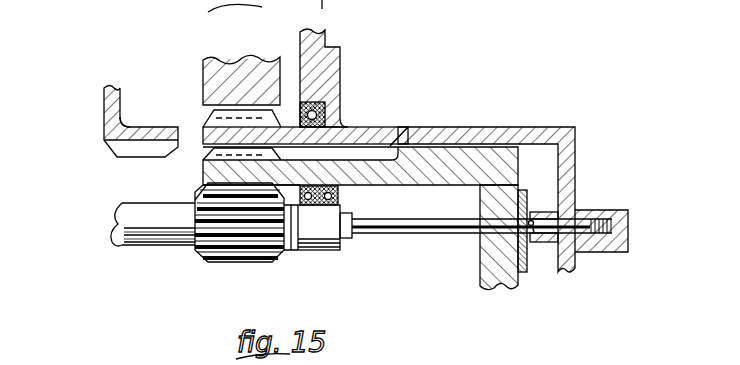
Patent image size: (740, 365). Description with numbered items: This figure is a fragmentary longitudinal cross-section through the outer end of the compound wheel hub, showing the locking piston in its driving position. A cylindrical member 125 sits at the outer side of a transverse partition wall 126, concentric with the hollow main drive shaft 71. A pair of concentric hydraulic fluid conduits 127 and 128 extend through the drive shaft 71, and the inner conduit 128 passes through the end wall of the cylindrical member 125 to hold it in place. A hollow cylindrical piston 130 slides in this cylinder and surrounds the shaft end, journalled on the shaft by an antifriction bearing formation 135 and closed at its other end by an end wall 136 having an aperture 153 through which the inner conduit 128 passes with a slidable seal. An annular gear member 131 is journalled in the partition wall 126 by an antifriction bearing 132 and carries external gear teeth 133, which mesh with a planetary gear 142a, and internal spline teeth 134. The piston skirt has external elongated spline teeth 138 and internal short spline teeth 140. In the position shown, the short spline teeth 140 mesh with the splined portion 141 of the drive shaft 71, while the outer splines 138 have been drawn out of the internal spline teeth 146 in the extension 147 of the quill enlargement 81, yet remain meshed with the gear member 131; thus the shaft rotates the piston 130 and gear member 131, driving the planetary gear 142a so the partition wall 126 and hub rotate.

The main drive shaft 71 is at (134, 246).
The annular enlargement 81 is at (104, 88).
The cylindrical member 125 is at (510, 127).
The transverse partition wall 126 is at (315, 36).
The hydraulic fluid conduit 127 is at (345, 238).
The inner hydraulic fluid conduit 128 is at (463, 235).
The hollow cylindrical piston 130 is at (443, 185).
The annular gear member 131 is at (206, 131).
The antifriction bearing 132 is at (318, 110).
The external gear teeth 133 is at (206, 116).
The internal spline teeth 134 is at (206, 152).
The antifriction bearing formation 135 is at (340, 197).
The end wall 136 is at (509, 288).
The elongated spline teeth 138 is at (404, 127).
The short spline teeth 140 is at (198, 193).
The splined portion 141 is at (240, 263).
The planetary gear 142a is at (242, 62).
The internal spline teeth 146 is at (110, 150).
The extension 147 is at (130, 125).
The aperture 153 is at (537, 248).